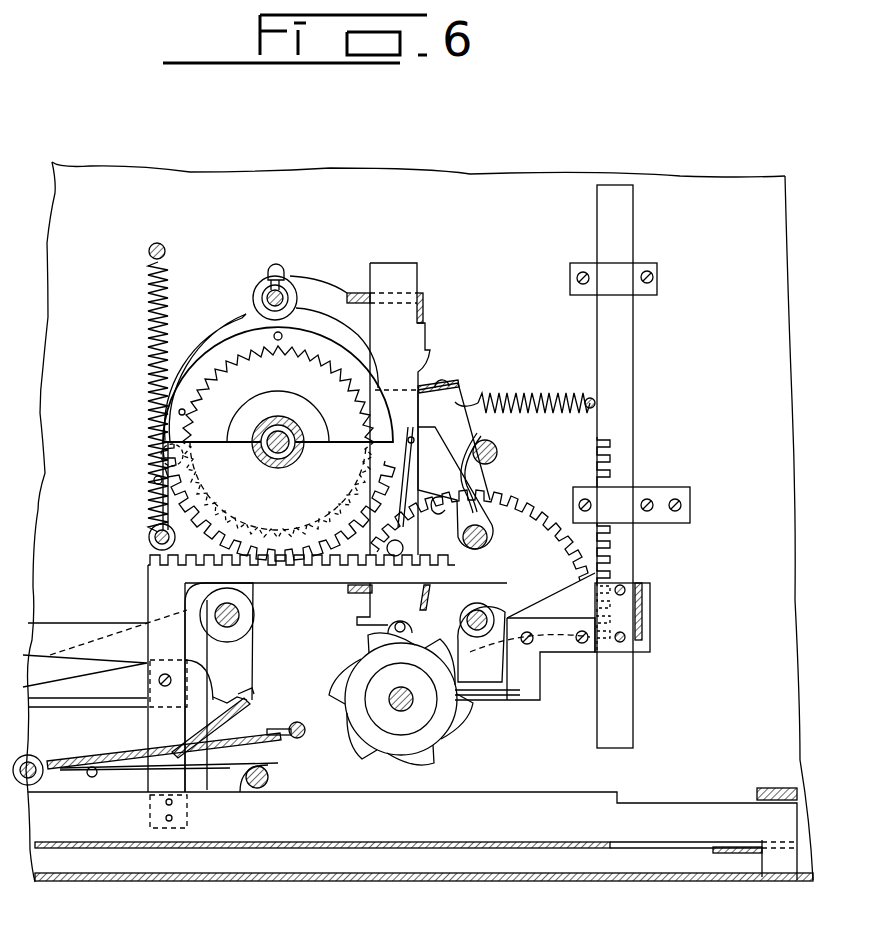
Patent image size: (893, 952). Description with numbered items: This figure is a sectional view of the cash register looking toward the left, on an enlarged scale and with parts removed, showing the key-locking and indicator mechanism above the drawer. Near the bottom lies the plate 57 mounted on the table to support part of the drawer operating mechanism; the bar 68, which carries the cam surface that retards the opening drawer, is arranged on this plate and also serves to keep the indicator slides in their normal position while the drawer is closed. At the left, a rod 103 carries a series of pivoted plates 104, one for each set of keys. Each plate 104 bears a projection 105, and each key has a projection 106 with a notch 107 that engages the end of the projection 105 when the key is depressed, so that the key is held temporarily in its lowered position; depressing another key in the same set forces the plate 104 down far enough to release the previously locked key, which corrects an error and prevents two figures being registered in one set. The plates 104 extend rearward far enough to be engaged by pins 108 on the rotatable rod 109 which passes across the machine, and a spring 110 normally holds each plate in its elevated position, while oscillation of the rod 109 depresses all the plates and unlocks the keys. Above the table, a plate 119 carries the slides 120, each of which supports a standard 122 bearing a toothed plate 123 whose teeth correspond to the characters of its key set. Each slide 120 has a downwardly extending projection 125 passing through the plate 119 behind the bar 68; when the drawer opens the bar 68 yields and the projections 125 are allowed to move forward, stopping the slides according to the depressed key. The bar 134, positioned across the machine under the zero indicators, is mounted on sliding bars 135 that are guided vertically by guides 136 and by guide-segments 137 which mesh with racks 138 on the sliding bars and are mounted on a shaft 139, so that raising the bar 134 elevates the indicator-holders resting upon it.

The plate 57 is at (637, 882).
The bar 68 is at (713, 851).
The rod 103 is at (37, 782).
The plate 104 is at (64, 762).
The projection 105 is at (247, 710).
The projection 106 is at (250, 668).
The notch 107 is at (218, 703).
The pin 108 is at (288, 728).
The rotatable rod 109 is at (308, 736).
The spring 110 is at (220, 768).
The plate 119 is at (583, 849).
The slide 120 is at (517, 802).
The standard 122 is at (155, 741).
The plate 123 is at (97, 707).
The projection 125 is at (770, 866).
The bar 134 is at (642, 585).
The sliding bar 135 is at (630, 355).
The guide 136 is at (655, 268).
The guide-segment 137 is at (537, 504).
The rack 138 is at (612, 462).
The shaft 139 is at (482, 611).